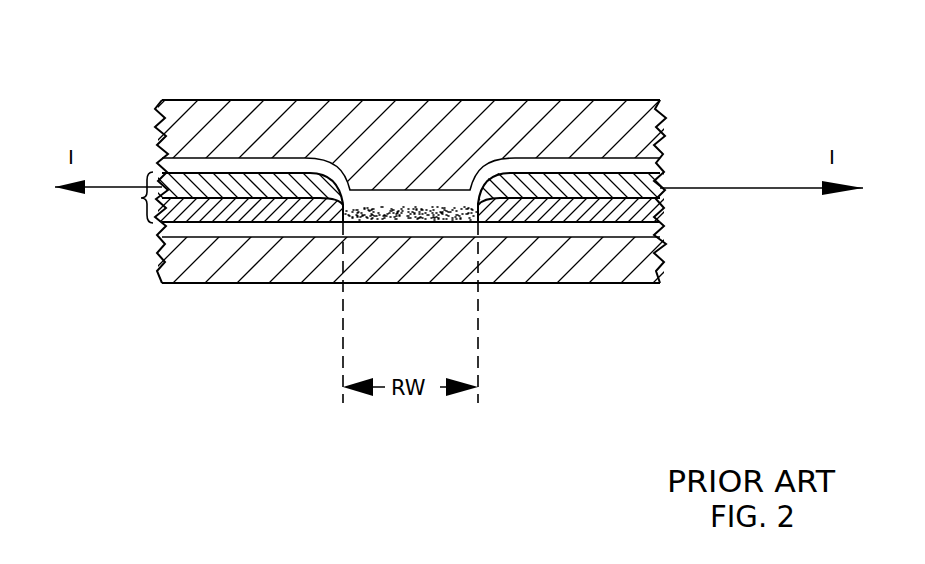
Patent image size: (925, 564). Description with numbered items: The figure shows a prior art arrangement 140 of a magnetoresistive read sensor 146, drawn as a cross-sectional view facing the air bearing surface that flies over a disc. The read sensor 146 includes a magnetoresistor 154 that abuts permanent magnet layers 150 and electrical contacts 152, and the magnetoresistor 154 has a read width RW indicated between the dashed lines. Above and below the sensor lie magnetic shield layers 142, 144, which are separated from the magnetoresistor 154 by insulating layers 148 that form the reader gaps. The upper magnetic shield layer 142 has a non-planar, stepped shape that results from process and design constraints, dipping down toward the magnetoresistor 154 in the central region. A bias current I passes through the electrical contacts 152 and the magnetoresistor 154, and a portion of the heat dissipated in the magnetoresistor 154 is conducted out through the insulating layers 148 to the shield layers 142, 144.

The prior art arrangement 140 is at (556, 62).
The magnetic shield layer 142 is at (640, 118).
The magnetic shield layer 144 is at (658, 268).
The read sensor 146 is at (123, 197).
The insulating layers 148 is at (642, 168).
The permanent magnet layers 150 is at (656, 211).
The electrical contacts 152 is at (272, 185).
The magnetoresistor 154 is at (403, 212).